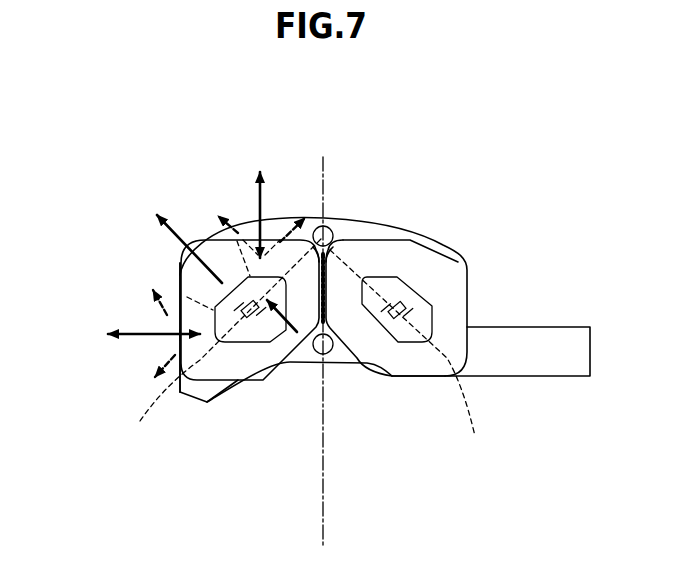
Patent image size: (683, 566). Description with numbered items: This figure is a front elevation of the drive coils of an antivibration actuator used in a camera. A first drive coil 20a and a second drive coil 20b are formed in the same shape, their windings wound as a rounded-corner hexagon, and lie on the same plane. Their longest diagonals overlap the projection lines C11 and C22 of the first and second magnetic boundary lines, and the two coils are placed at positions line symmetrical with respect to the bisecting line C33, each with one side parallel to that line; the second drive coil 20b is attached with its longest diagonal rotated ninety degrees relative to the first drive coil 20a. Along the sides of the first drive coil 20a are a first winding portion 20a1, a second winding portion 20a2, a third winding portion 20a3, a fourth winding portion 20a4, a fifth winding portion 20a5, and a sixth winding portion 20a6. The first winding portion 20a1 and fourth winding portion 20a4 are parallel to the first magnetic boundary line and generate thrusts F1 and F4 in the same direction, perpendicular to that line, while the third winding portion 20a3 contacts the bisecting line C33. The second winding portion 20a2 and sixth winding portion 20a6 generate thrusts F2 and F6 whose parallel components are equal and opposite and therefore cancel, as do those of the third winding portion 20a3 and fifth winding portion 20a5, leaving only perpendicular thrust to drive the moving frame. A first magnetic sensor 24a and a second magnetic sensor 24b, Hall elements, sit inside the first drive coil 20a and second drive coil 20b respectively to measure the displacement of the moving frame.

The first drive coil 20a is at (217, 250).
The first winding portion 20a1 is at (210, 288).
The second winding portion 20a2 is at (283, 222).
The third winding portion 20a3 is at (305, 293).
The fourth winding portion 20a4 is at (286, 337).
The fifth winding portion 20a5 is at (208, 402).
The sixth winding portion 20a6 is at (180, 338).
The second drive coil 20b is at (388, 239).
The first magnetic sensor 24a is at (253, 322).
The second magnetic sensor 24b is at (398, 305).
The thrust F1 is at (180, 258).
The thrust F2 is at (260, 196).
The thrust F4 is at (280, 338).
The thrust F6 is at (135, 334).
The projection line C11 is at (217, 345).
The projection line C22 is at (412, 359).
The bisecting line C33 is at (321, 524).